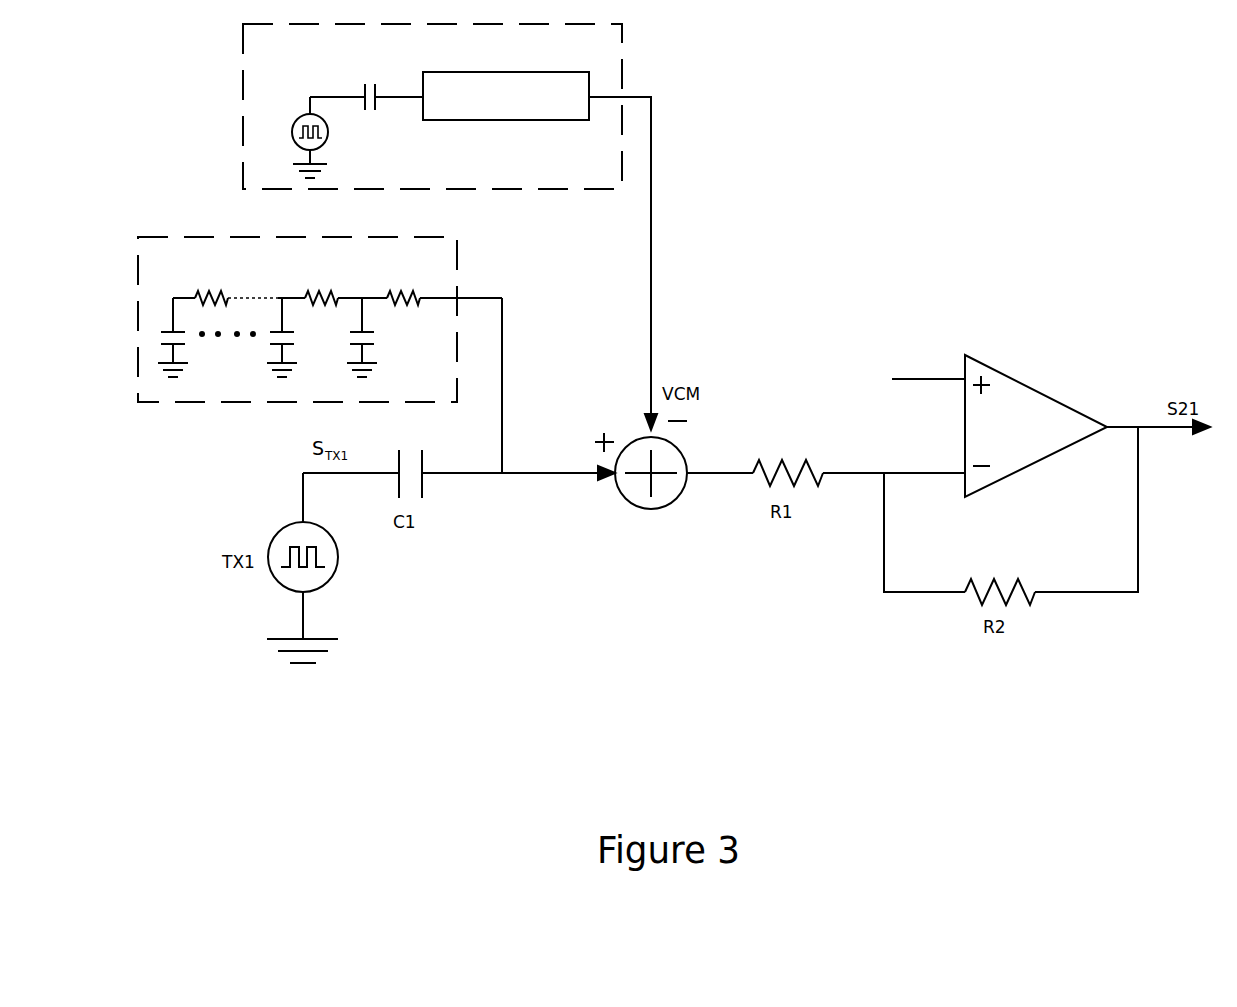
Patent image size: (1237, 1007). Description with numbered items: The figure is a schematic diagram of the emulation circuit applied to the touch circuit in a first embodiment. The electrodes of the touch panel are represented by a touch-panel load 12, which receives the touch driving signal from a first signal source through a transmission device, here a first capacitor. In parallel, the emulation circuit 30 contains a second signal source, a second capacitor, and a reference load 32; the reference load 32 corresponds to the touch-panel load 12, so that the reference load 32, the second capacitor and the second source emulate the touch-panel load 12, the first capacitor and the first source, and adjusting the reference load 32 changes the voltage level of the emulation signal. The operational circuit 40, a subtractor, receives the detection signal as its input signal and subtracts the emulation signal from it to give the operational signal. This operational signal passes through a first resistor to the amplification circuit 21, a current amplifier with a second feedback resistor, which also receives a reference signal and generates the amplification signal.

The emulation circuit 30 is at (243, 92).
The reference load 32 is at (560, 72).
The touch-panel load 12 is at (217, 237).
The operational circuit 40 is at (637, 509).
The amplification circuit 21 is at (1080, 409).